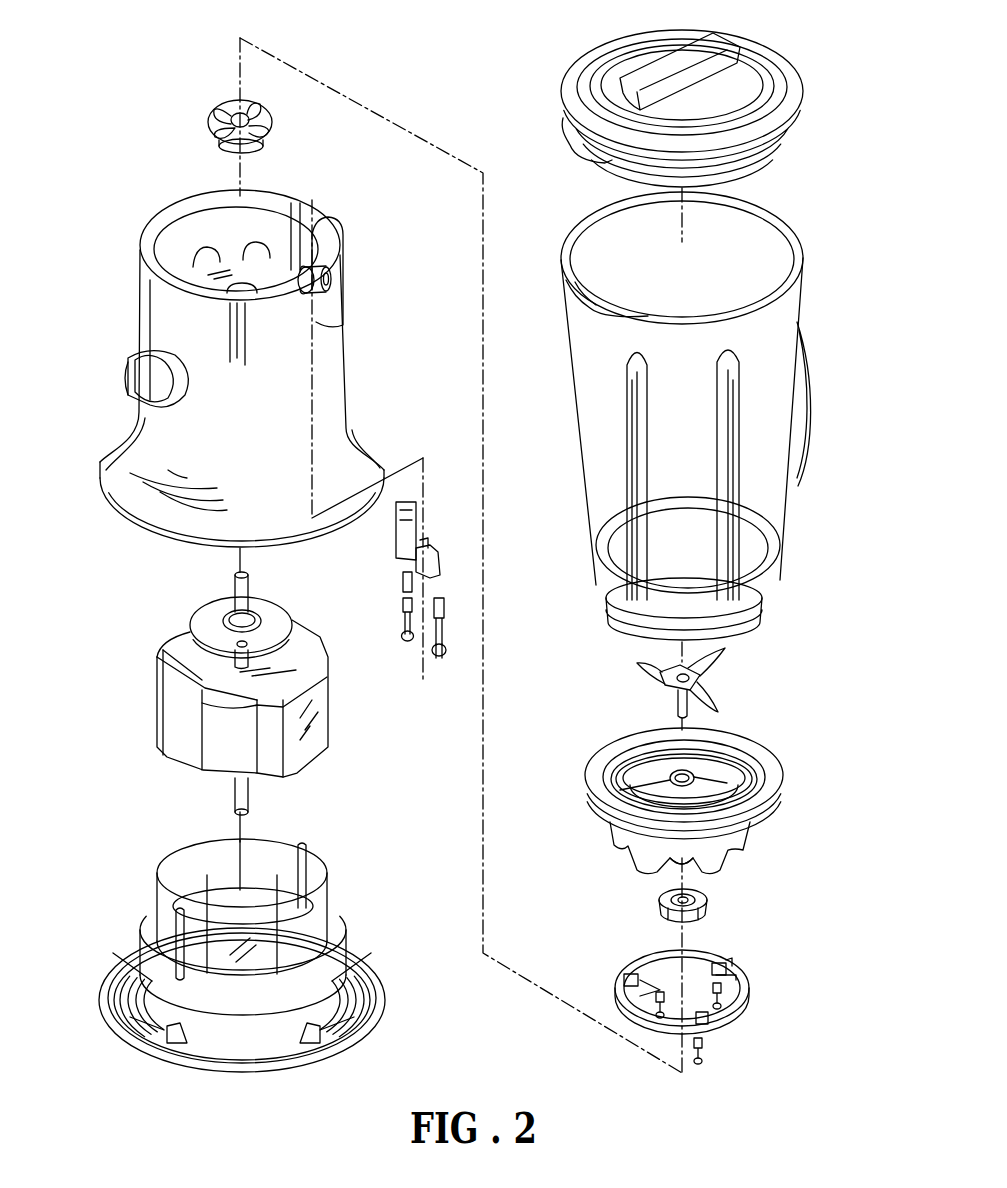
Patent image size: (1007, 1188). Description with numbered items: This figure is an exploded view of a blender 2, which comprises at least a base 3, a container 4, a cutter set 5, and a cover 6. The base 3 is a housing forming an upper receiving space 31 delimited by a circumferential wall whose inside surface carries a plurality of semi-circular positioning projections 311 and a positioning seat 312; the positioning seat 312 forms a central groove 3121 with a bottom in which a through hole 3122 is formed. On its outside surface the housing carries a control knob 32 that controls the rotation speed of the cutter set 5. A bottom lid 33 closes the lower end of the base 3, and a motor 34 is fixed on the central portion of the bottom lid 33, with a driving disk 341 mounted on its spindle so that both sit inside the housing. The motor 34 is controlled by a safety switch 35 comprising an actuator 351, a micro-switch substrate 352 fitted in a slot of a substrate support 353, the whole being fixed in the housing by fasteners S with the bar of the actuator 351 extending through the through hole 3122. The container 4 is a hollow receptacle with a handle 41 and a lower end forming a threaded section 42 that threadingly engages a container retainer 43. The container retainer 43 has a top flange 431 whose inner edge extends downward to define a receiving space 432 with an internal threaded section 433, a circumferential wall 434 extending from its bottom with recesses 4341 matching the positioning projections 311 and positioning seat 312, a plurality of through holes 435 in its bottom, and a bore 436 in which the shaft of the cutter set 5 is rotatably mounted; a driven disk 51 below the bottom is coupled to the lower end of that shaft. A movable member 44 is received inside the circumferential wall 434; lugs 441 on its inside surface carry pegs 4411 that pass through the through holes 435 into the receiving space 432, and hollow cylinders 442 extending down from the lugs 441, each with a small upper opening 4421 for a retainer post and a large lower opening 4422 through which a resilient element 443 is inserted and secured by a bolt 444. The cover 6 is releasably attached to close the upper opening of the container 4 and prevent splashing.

The blender 2 is at (180, 63).
The base 3 is at (365, 356).
The upper receiving space 31 is at (180, 226).
The positioning projections 311 is at (262, 250).
The positioning seat 312 is at (330, 284).
The central groove 3121 is at (338, 306).
The through hole 3122 is at (322, 272).
The control knob 32 is at (130, 378).
The bottom lid 33 is at (384, 973).
The motor 34 is at (162, 645).
The driving disk 341 is at (208, 128).
The safety switch 35 is at (442, 523).
The actuator 351 is at (438, 554).
The micro-switch substrate 352 is at (400, 546).
The substrate support 353 is at (423, 632).
The fasteners S is at (449, 652).
The container 4 is at (559, 224).
The handle 41 is at (792, 486).
The threaded section 42 is at (738, 618).
The container retainer 43 is at (778, 743).
The top flange 431 is at (774, 769).
The receiving space 432 is at (733, 758).
The threaded section 433 is at (627, 786).
The circumferential wall 434 is at (752, 846).
The recesses 4341 is at (733, 863).
The through holes 435 is at (620, 776).
The bore 436 is at (680, 773).
The movable member 44 is at (644, 941).
The lugs 441 is at (732, 1021).
The hollow cylinders 442 is at (705, 967).
The pegs 4411 is at (730, 961).
The upper opening 4421 is at (742, 973).
The lower opening 4422 is at (748, 989).
The resilient element 443 is at (705, 1046).
The bolt 444 is at (702, 1063).
The cutter set 5 is at (712, 672).
The driven disk 51 is at (710, 916).
The cover 6 is at (574, 80).